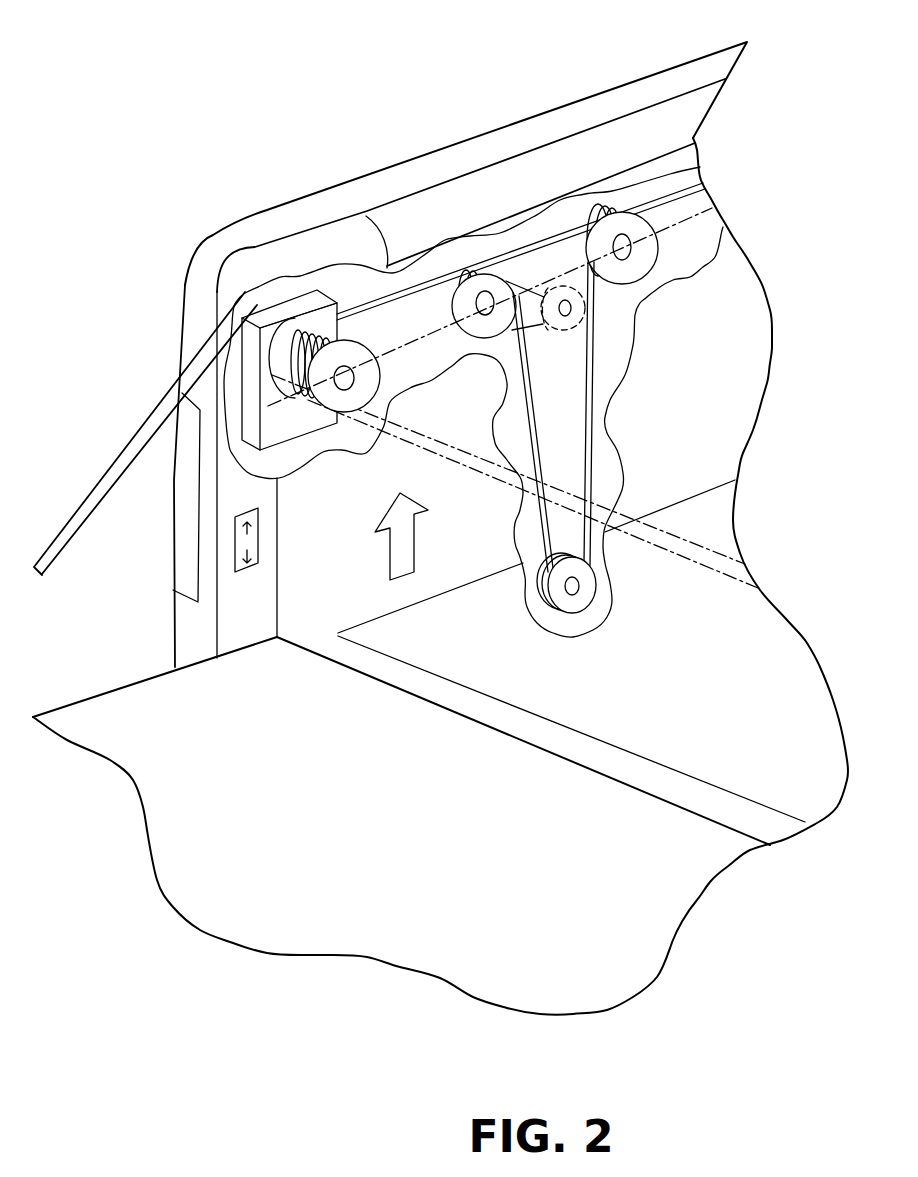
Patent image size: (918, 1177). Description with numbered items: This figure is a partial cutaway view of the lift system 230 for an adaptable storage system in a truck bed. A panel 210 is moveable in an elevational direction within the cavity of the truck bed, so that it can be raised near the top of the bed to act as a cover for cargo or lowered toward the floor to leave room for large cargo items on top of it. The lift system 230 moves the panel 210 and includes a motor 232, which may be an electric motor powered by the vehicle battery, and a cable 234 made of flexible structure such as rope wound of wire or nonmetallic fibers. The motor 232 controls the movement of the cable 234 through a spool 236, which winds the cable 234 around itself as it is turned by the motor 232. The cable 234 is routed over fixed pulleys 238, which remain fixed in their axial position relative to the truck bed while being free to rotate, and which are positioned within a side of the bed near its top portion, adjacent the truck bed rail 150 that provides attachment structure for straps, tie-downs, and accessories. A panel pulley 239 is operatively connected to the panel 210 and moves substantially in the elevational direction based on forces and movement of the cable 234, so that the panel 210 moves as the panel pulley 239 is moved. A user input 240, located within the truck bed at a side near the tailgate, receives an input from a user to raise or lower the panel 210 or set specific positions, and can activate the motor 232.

The truck bed rail 150 is at (670, 120).
The panel 210 is at (690, 527).
The lift system 230 is at (250, 352).
The motor 232 is at (265, 312).
The cable 234 is at (662, 197).
The spool 236 is at (357, 362).
The fixed pulley 238 is at (483, 277).
The panel pulley 239 is at (558, 282).
The user input 240 is at (235, 533).